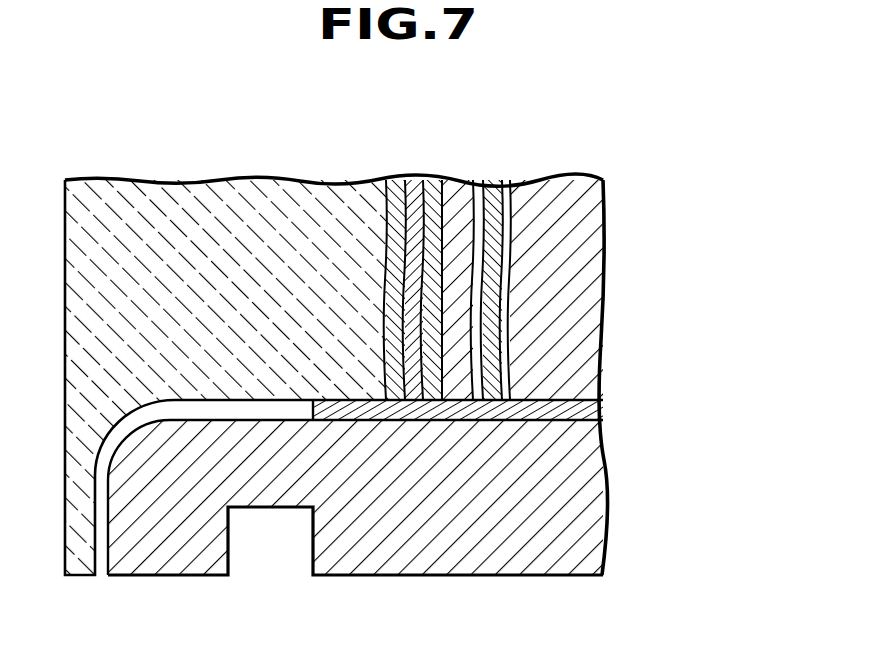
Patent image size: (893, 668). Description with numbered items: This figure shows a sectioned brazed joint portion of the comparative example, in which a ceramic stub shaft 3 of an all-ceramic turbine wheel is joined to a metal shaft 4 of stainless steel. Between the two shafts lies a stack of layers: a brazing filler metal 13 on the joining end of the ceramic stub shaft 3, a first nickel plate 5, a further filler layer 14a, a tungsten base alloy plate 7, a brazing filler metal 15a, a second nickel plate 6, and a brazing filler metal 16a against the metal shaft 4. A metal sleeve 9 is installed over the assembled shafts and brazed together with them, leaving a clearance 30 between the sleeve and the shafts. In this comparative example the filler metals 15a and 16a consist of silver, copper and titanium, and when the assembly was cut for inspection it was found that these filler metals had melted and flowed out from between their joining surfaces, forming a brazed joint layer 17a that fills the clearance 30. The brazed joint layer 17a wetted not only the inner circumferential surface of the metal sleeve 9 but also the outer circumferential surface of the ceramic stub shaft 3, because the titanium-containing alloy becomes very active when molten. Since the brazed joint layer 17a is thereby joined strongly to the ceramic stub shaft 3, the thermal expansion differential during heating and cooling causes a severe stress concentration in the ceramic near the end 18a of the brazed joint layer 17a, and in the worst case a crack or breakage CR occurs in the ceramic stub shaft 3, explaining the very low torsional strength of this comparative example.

The ceramic stub shaft 3 is at (296, 178).
The brazing filler metal 13 is at (373, 178).
The nickel plate 5 is at (410, 178).
The layer 14a is at (430, 178).
The tungsten base alloy plate 7 is at (460, 178).
The brazing filler metal 15a is at (478, 178).
The brazing filler metal 16a is at (507, 178).
The nickel plate 6 is at (553, 178).
The metal shaft 4 is at (593, 178).
The clearance 30 is at (398, 421).
The brazed joint layer 17a is at (473, 420).
The metal sleeve 9 is at (447, 557).
The crack or breakage CR is at (308, 362).
The end of the brazed joint layer 18a is at (302, 333).